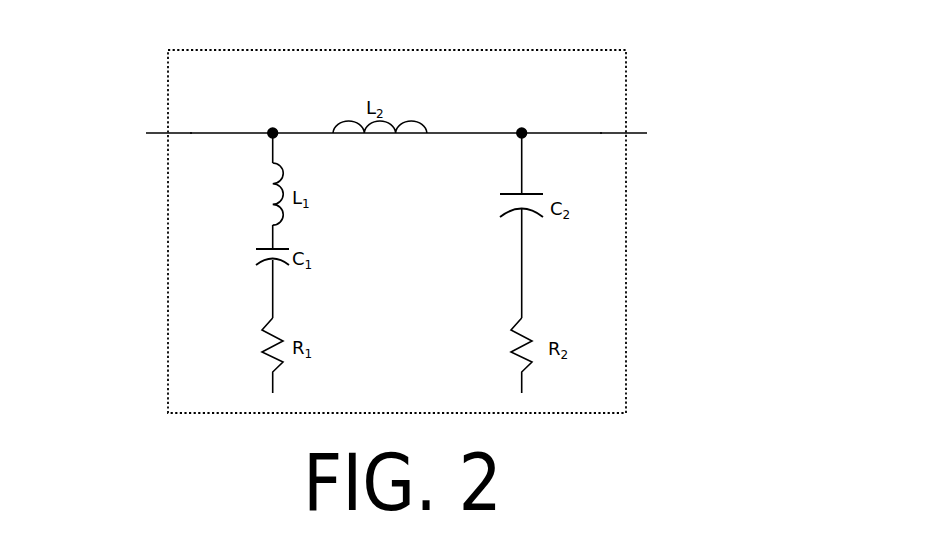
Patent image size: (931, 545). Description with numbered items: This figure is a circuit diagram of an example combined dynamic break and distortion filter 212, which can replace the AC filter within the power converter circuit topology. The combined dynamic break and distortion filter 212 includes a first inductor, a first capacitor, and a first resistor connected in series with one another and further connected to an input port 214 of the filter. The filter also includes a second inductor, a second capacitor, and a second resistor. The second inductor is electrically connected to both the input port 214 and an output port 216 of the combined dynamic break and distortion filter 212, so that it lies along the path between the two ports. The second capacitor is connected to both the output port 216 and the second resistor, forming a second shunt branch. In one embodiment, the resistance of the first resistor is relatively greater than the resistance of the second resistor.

The combined dynamic break and distortion filter 212 is at (626, 95).
The input port 214 is at (190, 135).
The output port 216 is at (602, 135).